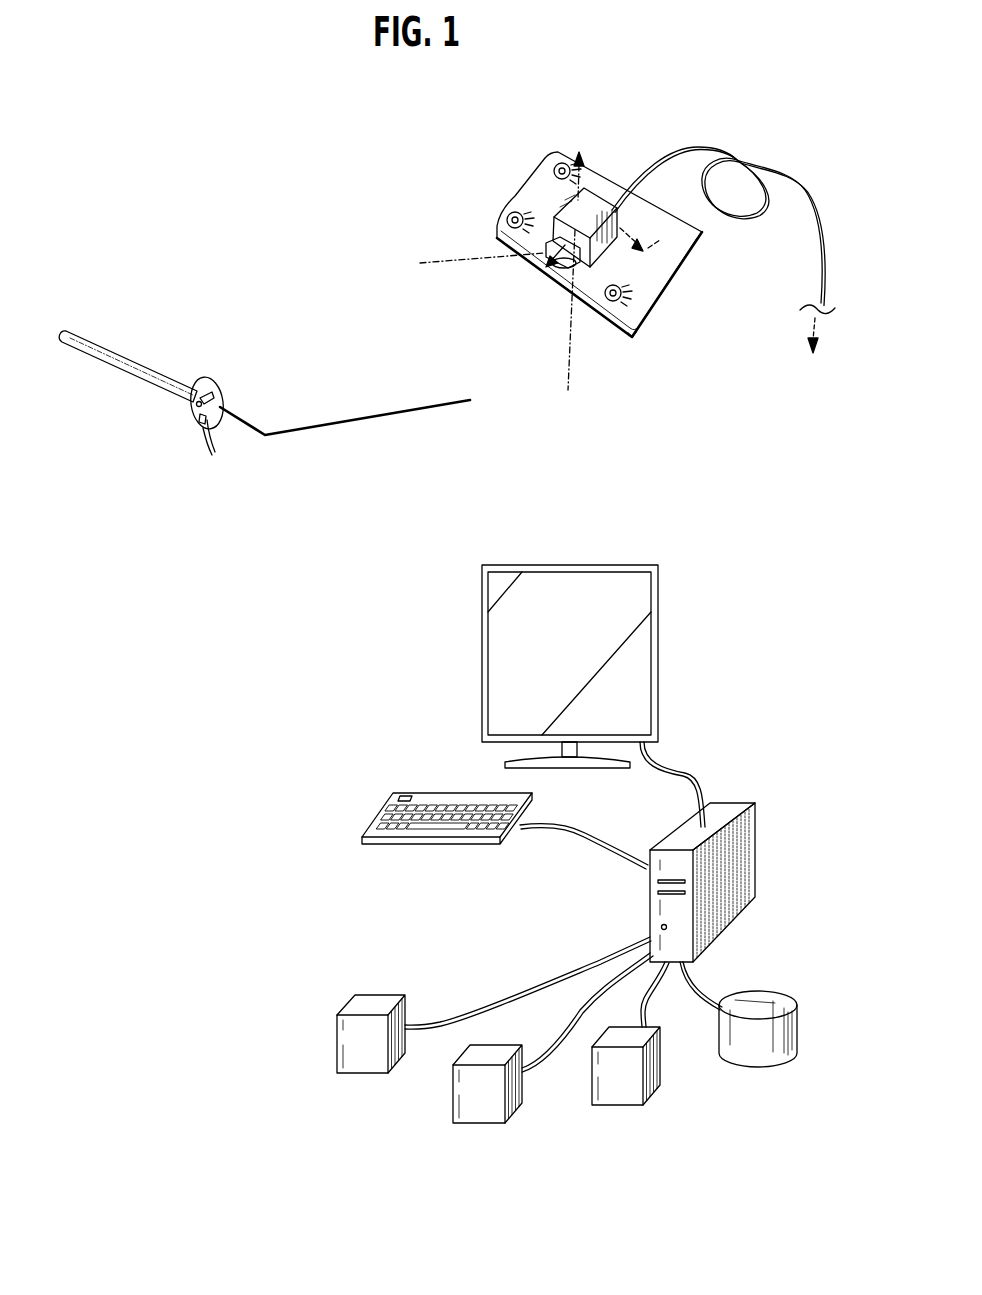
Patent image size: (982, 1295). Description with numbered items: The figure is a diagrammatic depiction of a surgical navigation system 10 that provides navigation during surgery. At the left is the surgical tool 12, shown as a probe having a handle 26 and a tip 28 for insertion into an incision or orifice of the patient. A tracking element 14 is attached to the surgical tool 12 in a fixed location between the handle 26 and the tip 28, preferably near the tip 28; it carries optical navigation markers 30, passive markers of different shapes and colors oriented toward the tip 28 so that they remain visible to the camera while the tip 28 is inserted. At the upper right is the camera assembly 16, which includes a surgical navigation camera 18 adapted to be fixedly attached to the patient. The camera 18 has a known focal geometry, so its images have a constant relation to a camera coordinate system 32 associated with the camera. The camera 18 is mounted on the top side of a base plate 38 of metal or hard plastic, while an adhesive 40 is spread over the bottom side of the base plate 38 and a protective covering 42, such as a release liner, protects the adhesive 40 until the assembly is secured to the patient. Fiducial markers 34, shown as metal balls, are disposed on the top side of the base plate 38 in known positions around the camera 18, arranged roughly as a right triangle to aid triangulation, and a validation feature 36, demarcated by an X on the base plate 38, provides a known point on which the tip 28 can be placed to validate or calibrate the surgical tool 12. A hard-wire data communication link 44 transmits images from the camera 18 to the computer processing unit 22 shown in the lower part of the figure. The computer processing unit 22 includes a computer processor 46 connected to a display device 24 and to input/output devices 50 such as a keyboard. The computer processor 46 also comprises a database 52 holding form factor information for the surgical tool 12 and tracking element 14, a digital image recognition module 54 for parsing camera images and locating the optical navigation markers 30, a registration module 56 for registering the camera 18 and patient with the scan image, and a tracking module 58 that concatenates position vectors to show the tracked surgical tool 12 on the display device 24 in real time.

The navigation system 10 is at (205, 83).
The surgical tool 12 is at (264, 391).
The tracking element 14 is at (212, 381).
The camera assembly 16 is at (577, 246).
The surgical navigation camera 18 is at (620, 204).
The computer processing unit 22 is at (337, 640).
The display device 24 is at (658, 652).
The handle 26 is at (107, 350).
The tip 28 is at (317, 415).
The optical navigation markers 30 is at (203, 437).
The camera coordinate system 32 is at (583, 198).
The fiducial markers 34 is at (550, 163).
The validation feature 36 is at (560, 277).
The base plate 38 is at (655, 290).
The adhesive 40 is at (672, 279).
The protective covering 42 is at (635, 338).
The data communication link 44 is at (772, 163).
The computer processor 46 is at (742, 858).
The input/output devices 50 is at (387, 800).
The database 52 is at (757, 1062).
The digital image recognition module 54 is at (342, 1048).
The registration module 56 is at (460, 1093).
The tracking module 58 is at (603, 1100).